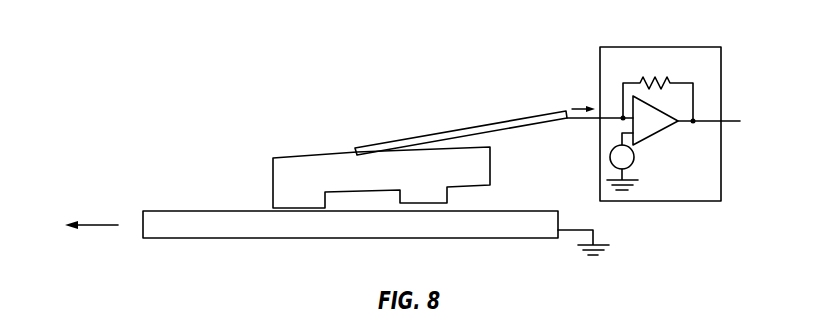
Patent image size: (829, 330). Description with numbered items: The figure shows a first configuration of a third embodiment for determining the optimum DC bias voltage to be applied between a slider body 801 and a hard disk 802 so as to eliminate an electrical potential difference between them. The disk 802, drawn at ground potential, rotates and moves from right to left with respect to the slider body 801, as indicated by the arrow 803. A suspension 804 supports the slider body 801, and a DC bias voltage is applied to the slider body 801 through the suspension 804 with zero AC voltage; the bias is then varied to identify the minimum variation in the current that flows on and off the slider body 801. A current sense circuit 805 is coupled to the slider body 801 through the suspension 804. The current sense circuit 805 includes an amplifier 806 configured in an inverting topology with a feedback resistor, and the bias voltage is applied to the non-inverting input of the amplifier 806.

The slider body 801 is at (292, 168).
The hard disk 802 is at (243, 227).
The arrow 803 is at (100, 227).
The suspension 804 is at (430, 135).
The current sense circuit 805 is at (554, 55).
The amplifier 806 is at (661, 132).